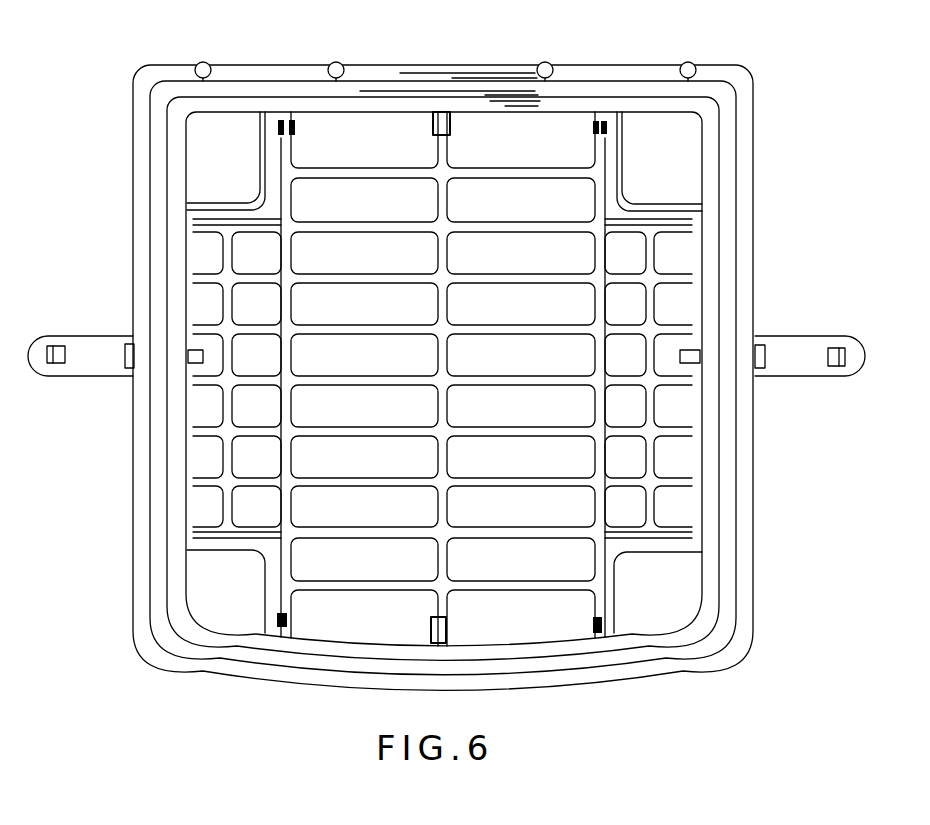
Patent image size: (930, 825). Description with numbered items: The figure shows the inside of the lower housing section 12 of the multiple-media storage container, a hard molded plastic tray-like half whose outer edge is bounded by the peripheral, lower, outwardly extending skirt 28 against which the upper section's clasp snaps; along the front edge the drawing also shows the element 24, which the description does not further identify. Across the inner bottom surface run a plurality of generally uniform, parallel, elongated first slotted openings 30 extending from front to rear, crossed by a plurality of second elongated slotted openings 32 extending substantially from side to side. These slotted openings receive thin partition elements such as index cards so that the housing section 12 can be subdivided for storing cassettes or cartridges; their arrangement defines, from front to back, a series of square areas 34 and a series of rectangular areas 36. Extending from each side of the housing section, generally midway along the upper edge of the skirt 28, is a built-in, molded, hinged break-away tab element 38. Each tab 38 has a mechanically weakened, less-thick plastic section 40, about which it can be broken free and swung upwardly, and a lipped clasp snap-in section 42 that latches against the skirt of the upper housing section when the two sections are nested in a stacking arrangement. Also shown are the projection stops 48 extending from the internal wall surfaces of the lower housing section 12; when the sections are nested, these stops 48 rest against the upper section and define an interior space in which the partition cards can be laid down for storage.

The lower housing section 12 is at (90, 92).
The front wall 24 is at (478, 66).
The skirt 28 is at (733, 263).
The first slotted openings 30 is at (289, 564).
The second slotted openings 32 is at (495, 320).
The square areas 34 is at (639, 312).
The rectangular areas 36 is at (361, 315).
The break-away tab element 38 is at (82, 341).
The weakened plastic section 40 is at (124, 362).
The clasp snap-in section 42 is at (60, 364).
The projection stops 48 is at (433, 130).